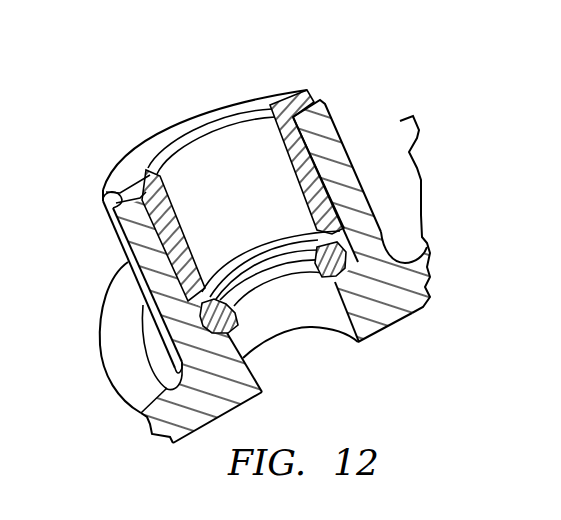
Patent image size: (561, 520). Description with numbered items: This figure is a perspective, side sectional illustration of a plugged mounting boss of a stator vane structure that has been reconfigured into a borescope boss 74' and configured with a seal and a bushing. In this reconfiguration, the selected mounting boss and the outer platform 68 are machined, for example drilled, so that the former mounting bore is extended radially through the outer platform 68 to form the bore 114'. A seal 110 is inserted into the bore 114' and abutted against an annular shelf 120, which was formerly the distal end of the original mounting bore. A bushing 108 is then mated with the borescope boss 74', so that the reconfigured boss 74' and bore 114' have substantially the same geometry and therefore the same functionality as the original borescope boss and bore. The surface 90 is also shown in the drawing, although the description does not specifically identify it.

The bushing 108 is at (272, 105).
The borescope boss 74' is at (355, 171).
The seal 110 is at (350, 262).
The outer platform 68 is at (441, 279).
The bottom face of housing 90 is at (394, 325).
The bore 114' is at (293, 345).
The annular shelf 120 is at (207, 320).